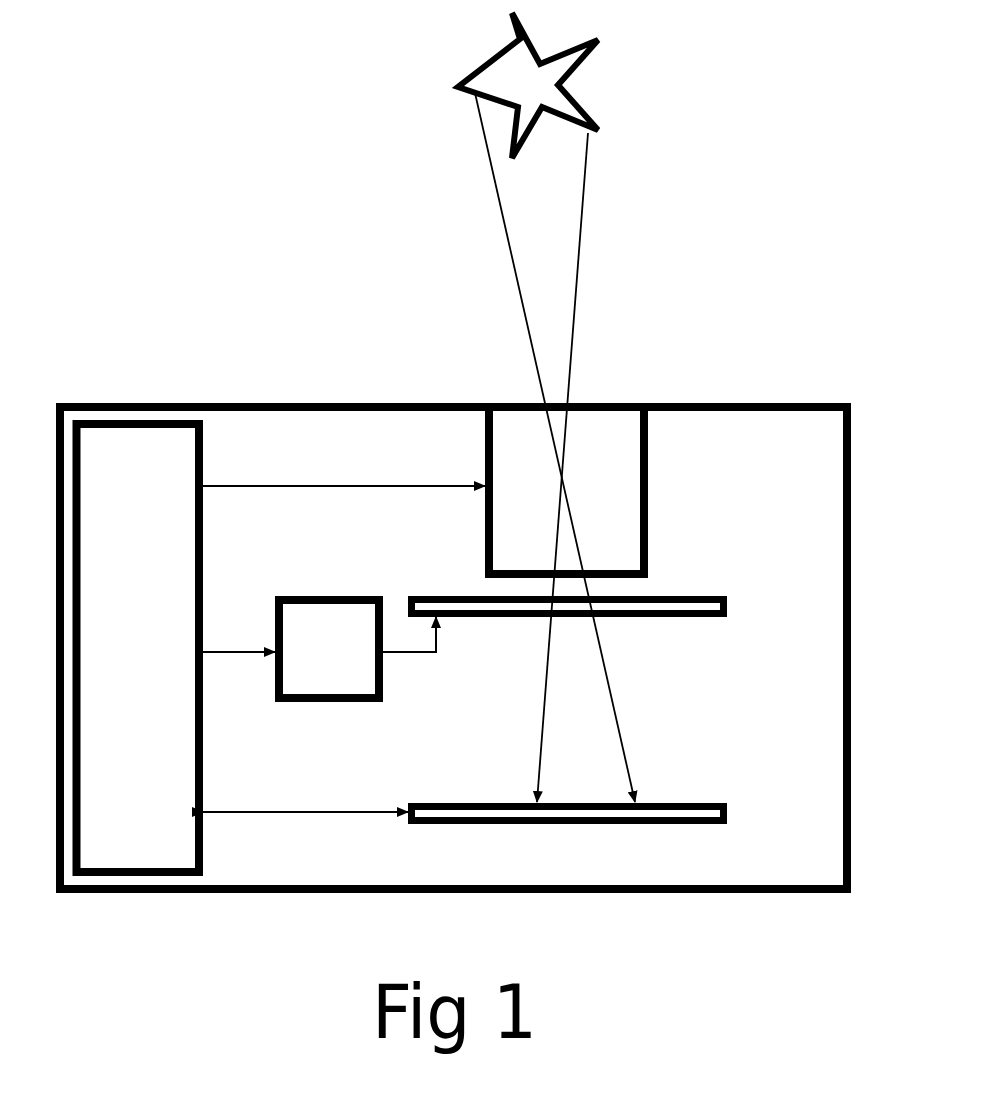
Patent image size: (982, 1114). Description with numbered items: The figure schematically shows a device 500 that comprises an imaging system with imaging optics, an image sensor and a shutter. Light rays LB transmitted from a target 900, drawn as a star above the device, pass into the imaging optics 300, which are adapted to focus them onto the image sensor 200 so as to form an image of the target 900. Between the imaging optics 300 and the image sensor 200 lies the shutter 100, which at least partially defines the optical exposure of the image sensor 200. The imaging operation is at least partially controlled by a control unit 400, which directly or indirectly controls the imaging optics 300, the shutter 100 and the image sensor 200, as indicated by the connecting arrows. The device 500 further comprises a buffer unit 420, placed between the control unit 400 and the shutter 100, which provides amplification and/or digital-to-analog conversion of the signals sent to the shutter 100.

The shutter 100 is at (727, 605).
The image sensor 200 is at (727, 813).
The imaging optics 300 is at (648, 452).
The control unit 400 is at (203, 736).
The buffer unit 420 is at (383, 678).
The device 500 is at (252, 320).
The target 900 is at (585, 62).
The light rays LB is at (547, 447).